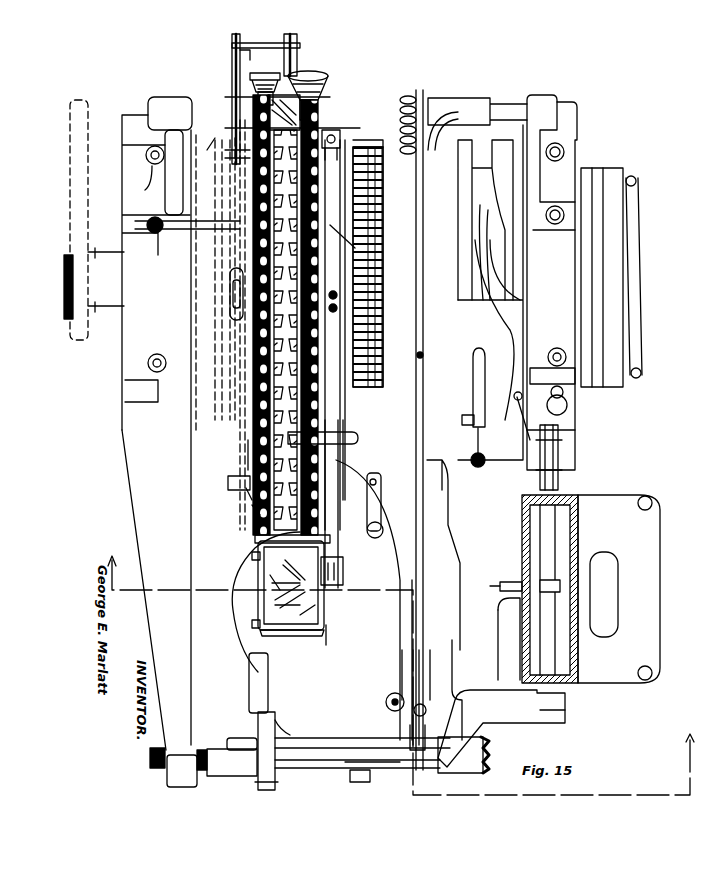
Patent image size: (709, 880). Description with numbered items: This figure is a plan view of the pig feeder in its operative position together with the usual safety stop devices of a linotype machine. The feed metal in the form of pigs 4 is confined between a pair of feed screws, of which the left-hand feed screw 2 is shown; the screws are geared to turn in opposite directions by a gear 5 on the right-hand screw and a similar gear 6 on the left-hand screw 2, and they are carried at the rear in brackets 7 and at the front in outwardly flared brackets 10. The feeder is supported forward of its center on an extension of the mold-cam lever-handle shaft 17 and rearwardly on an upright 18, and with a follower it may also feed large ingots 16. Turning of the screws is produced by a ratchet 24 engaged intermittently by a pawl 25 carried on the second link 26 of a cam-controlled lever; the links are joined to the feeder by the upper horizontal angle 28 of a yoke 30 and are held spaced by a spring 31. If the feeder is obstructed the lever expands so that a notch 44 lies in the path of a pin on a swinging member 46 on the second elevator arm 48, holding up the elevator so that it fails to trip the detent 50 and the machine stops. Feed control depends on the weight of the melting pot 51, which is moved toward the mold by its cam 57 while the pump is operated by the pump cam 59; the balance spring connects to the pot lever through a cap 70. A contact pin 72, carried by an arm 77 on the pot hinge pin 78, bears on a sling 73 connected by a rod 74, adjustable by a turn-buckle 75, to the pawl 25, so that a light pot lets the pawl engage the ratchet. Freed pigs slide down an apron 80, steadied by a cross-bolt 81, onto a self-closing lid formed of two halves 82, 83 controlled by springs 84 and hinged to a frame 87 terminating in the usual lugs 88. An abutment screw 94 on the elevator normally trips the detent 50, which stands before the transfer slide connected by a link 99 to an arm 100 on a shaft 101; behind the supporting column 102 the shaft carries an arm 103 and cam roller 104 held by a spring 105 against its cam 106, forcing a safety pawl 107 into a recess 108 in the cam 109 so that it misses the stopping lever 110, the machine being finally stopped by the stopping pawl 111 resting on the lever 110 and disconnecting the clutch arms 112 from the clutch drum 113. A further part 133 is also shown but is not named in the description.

The feed screw 2 is at (326, 130).
The pig 4 is at (326, 594).
The gear 5 is at (250, 76).
The gear 6 is at (326, 78).
The bracket 7 is at (250, 90).
The bracket 10 is at (328, 534).
The large ingot 16 is at (400, 667).
The mold-cam lever-handle shaft 17 is at (360, 438).
The upright 18 is at (200, 222).
The ratchet 24 is at (233, 57).
The pawl 25 is at (238, 42).
The second link 26 is at (296, 60).
The upper horizontal angle 28 is at (372, 165).
The yoke 30 is at (235, 112).
The spring 31 is at (300, 44).
The notch 44 is at (418, 138).
The swinging member 46 is at (418, 354).
The second elevator arm 48 is at (417, 196).
The detent 50 is at (385, 735).
The melting pot 51 is at (280, 700).
The pot cam 57 is at (358, 248).
The pump cam 59 is at (343, 575).
The cap 70 is at (228, 485).
The contact pin 72 is at (258, 506).
The sling 73 is at (250, 452).
The connecting rod 74 is at (246, 420).
The turn-buckle 75 is at (232, 290).
The arm 77 is at (246, 490).
The pot hinge pin 78 is at (379, 488).
The apron 80 is at (285, 569).
The cross-bolt 81 is at (339, 543).
The lid half 82 is at (270, 580).
The lid half 83 is at (275, 605).
The spring 84 is at (290, 640).
The frame 87 is at (326, 625).
The lug 88 is at (253, 630).
The abutment screw 94 is at (418, 706).
The link 99 is at (412, 770).
The arm 100 is at (512, 715).
The shaft 101 is at (550, 548).
The supporting column 102 is at (619, 589).
The arm 103 is at (536, 428).
The cam roller 104 is at (526, 408).
The spring 105 is at (505, 598).
The cam 106 is at (512, 330).
The safety pawl 107 is at (475, 396).
The recess 108 is at (464, 420).
The cam 109 is at (474, 352).
The stopping lever 110 is at (477, 448).
The stopping pawl 111 is at (466, 262).
The clutch arms 112 is at (634, 318).
The clutch drum 113 is at (612, 372).
The frame 133 is at (172, 647).